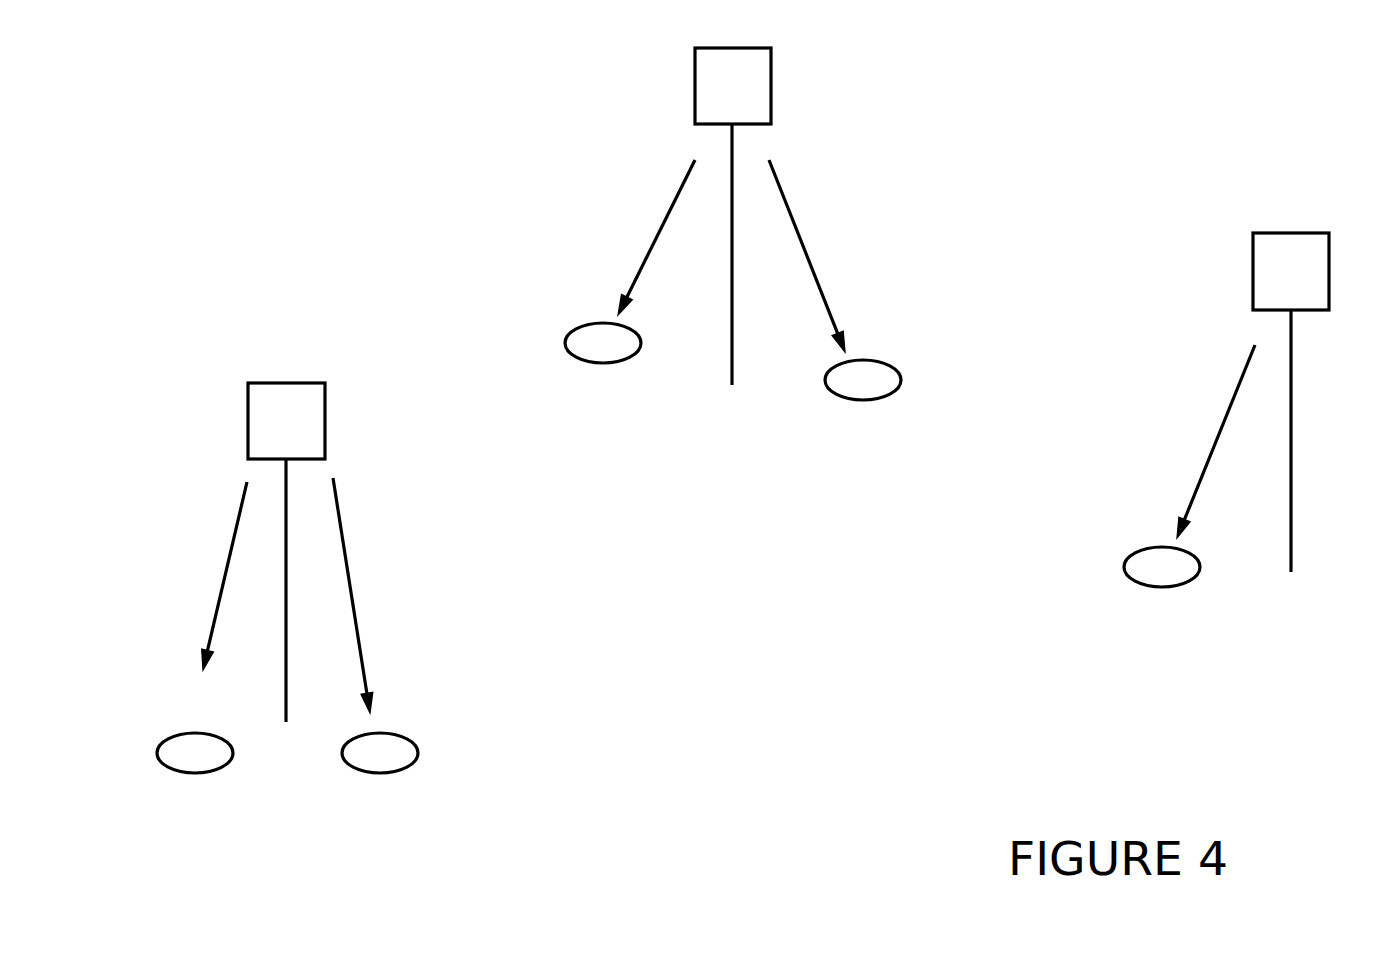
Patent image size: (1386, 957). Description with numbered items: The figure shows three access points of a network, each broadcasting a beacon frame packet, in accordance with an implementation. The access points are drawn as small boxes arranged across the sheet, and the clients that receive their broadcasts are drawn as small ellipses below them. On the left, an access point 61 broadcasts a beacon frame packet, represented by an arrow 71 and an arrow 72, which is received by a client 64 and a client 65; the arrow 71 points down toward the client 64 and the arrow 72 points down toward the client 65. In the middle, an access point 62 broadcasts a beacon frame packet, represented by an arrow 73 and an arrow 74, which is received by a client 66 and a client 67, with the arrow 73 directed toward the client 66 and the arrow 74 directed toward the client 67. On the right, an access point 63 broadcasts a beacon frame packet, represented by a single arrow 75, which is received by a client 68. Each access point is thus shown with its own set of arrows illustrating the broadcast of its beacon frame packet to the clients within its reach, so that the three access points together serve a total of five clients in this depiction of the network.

The access point 61 is at (326, 388).
The access point 62 is at (772, 58).
The access point 63 is at (1330, 244).
The client 64 is at (208, 771).
The client 65 is at (393, 771).
The client 66 is at (617, 361).
The client 67 is at (877, 398).
The client 68 is at (1176, 585).
The arrow 71 is at (214, 620).
The arrow 72 is at (358, 628).
The arrow 73 is at (646, 270).
The arrow 74 is at (820, 290).
The arrow 75 is at (1203, 474).